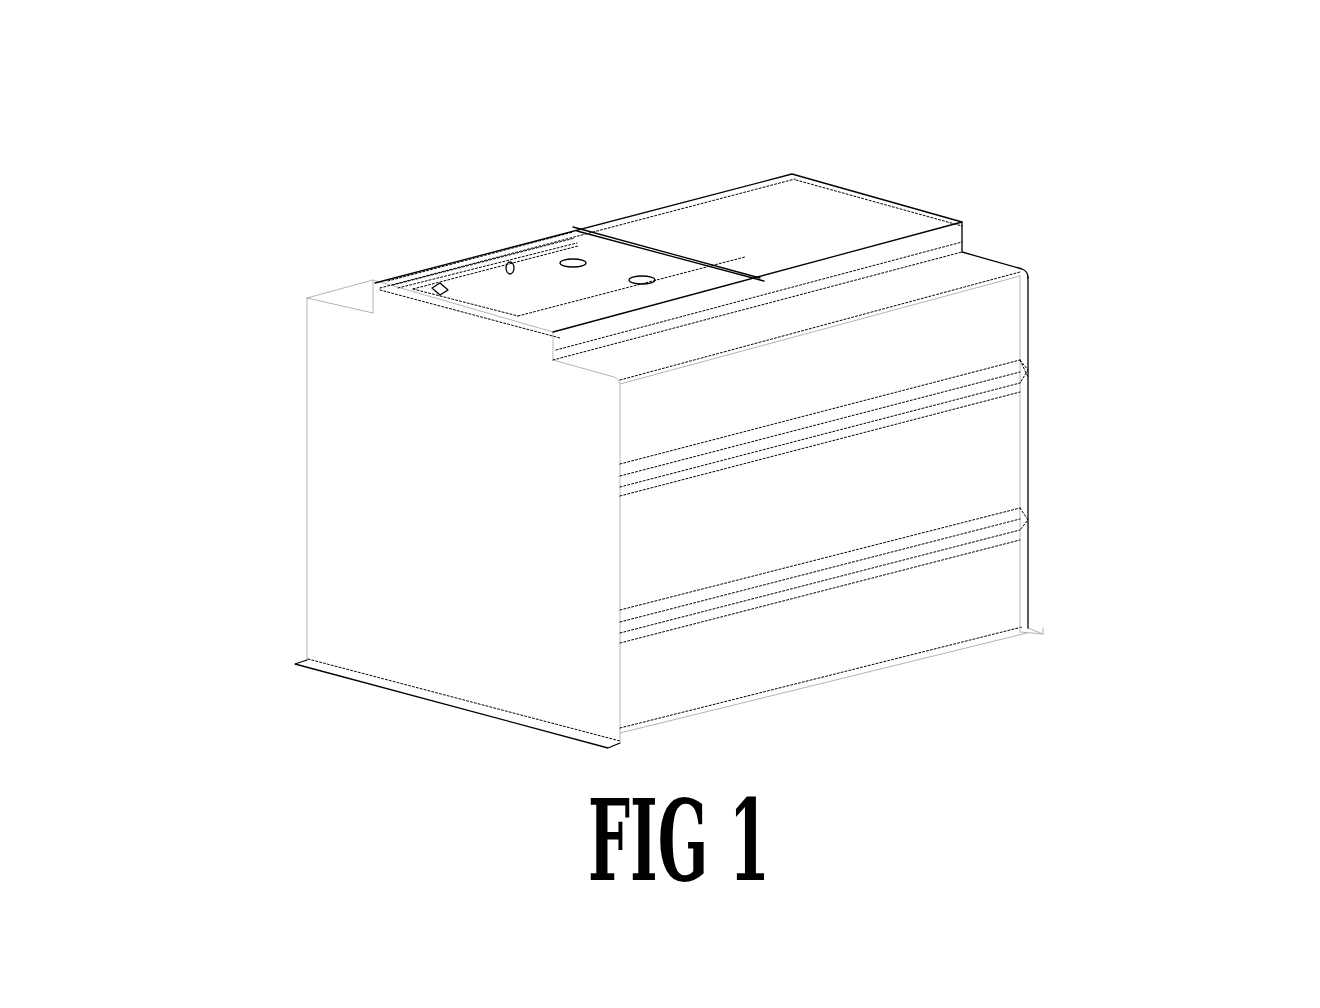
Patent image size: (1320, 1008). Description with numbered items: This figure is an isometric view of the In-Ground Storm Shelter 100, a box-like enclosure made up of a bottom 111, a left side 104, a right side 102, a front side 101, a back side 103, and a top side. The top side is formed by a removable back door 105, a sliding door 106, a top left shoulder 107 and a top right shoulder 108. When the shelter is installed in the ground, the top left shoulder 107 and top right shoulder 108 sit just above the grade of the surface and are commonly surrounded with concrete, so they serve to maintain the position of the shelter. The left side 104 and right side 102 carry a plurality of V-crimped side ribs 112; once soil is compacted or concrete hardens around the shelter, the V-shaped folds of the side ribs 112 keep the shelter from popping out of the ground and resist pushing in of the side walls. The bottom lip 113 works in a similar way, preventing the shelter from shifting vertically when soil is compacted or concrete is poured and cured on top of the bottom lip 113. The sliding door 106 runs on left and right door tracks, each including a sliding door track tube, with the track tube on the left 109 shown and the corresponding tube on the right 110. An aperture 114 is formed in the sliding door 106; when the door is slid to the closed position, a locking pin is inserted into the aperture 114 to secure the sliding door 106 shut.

The In-Ground Storm Shelter 100 is at (642, 203).
The front side 101 is at (422, 597).
The right side 102 is at (995, 492).
The back side 103 is at (1047, 418).
The left side 104 is at (565, 213).
The removable back door 105 is at (877, 223).
The sliding door 106 is at (507, 300).
The top left shoulder 107 is at (353, 294).
The top right shoulder 108 is at (988, 263).
The sliding door track tube 109 is at (523, 245).
The sliding door track tube 110 is at (952, 227).
The bottom 111 is at (958, 662).
The V-crimped side ribs 112 is at (1007, 525).
The bottom lip 113 is at (478, 708).
The aperture 114 is at (595, 275).